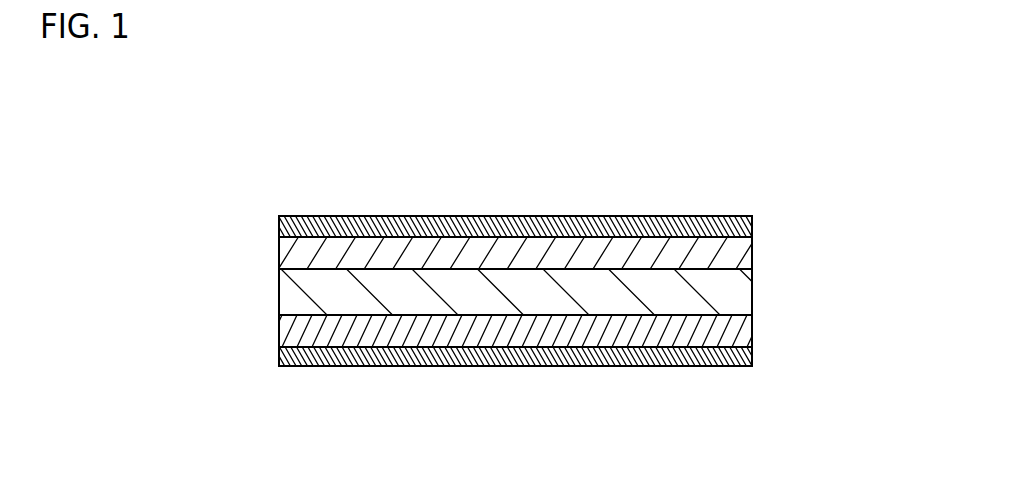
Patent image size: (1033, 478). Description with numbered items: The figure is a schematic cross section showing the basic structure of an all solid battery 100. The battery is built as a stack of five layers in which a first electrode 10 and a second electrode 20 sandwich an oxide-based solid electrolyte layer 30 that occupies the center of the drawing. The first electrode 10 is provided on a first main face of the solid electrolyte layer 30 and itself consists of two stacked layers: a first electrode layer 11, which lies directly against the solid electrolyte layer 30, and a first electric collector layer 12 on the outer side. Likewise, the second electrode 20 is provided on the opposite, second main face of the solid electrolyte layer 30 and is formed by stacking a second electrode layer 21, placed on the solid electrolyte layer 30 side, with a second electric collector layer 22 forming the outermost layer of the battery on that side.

The all solid battery 100 is at (935, 127).
The second electrode 20 is at (857, 193).
The second electric collector layer 22 is at (743, 221).
The second electrode layer 21 is at (752, 251).
The oxide-based solid electrolyte layer 30 is at (297, 302).
The first electrode 10 is at (857, 310).
The first electrode layer 11 is at (745, 326).
The first electric collector layer 12 is at (745, 354).